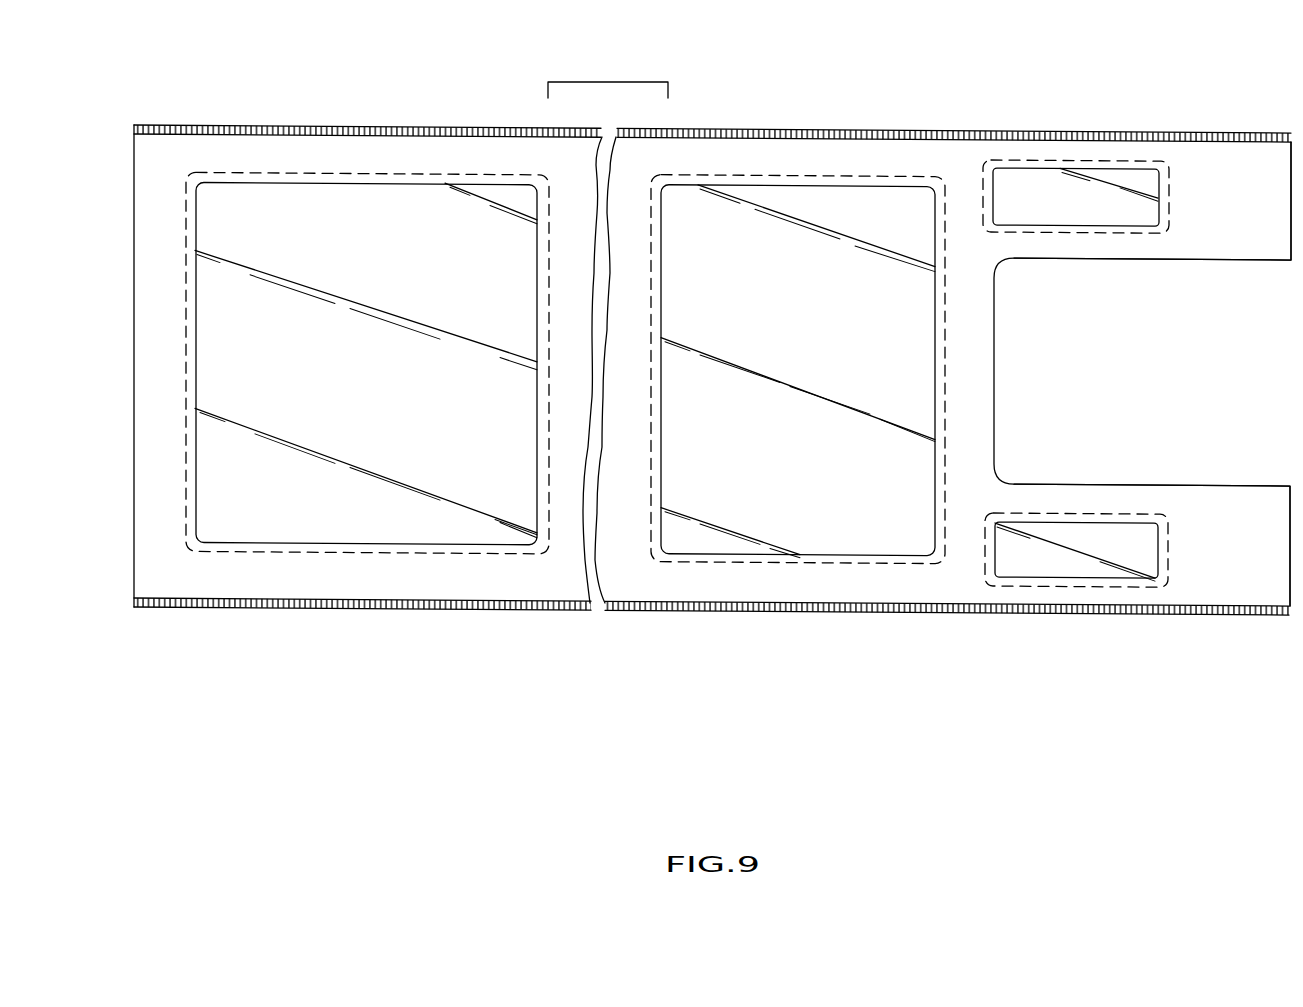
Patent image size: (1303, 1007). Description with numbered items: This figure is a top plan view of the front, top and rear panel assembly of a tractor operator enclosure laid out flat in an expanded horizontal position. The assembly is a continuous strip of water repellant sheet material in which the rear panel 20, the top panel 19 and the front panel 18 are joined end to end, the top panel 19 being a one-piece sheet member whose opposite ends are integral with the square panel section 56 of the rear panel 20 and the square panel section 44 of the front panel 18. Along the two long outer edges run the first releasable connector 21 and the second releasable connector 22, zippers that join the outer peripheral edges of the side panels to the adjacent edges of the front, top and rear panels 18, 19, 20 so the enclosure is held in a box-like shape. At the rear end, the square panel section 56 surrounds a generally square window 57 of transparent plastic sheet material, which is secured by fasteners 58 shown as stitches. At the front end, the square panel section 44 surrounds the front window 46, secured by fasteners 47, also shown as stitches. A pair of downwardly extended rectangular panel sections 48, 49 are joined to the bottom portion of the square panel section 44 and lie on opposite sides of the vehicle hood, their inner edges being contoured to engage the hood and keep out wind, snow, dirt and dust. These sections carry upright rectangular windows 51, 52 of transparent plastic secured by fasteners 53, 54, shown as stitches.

The front panel 18 is at (915, 108).
The top panel 19 is at (567, 591).
The rear panel 20 is at (343, 104).
The first releasable connector 21 is at (980, 613).
The second releasable connector 22 is at (446, 126).
The square panel section 44 is at (760, 176).
The front window 46 is at (868, 521).
The fasteners 47 is at (752, 556).
The rectangular panel section 48 is at (1212, 592).
The rectangular panel section 49 is at (1202, 168).
The upright rectangular window 51 is at (1070, 562).
The upright rectangular window 52 is at (1040, 183).
The fasteners 53 is at (1122, 592).
The fasteners 54 is at (1105, 161).
The square panel section 56 is at (150, 233).
The square window 57 is at (222, 403).
The fasteners 58 is at (273, 551).